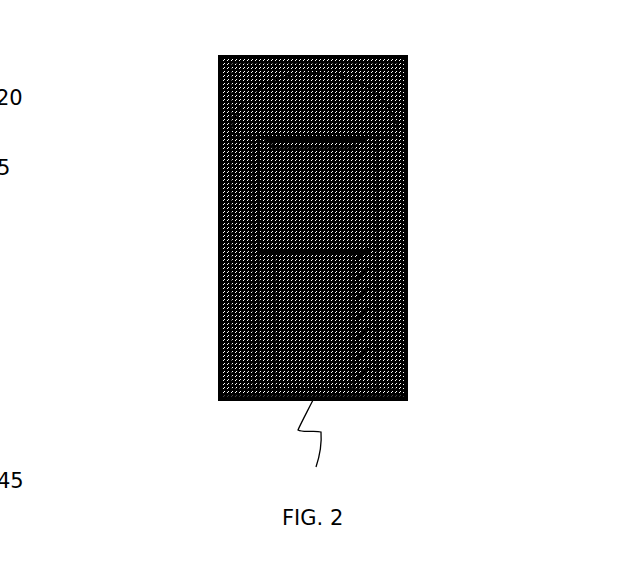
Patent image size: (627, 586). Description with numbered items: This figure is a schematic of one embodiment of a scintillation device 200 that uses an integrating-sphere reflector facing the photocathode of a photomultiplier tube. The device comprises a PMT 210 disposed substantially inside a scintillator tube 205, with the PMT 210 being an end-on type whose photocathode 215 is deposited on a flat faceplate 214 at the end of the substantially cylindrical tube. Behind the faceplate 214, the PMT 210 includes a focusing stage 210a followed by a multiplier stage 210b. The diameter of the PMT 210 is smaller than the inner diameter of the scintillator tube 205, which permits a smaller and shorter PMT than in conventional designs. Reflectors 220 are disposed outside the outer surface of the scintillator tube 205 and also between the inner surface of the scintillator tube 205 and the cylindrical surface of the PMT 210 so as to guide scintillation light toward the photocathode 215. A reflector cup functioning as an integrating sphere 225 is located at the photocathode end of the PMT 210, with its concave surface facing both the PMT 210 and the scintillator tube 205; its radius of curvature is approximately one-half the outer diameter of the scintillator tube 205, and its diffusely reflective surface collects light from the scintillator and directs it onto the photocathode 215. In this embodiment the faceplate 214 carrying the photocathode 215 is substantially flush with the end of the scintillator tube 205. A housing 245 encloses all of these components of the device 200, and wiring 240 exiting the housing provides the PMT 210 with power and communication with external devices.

The scintillation device 200 is at (446, 104).
The integrating sphere 225 is at (218, 80).
The reflectors 220 is at (218, 193).
The scintillator tube 205 is at (218, 215).
The focusing stage 210a is at (370, 225).
The faceplate 214 is at (347, 137).
The photocathode 215 is at (317, 147).
The PMT 210 is at (317, 285).
The multiplier stage 210b is at (343, 313).
The housing 245 is at (218, 357).
The wiring 240 is at (320, 455).